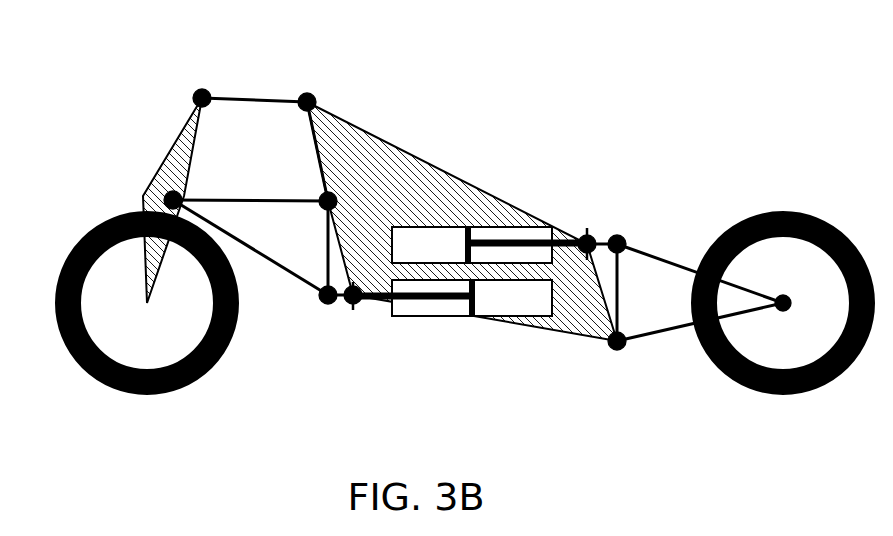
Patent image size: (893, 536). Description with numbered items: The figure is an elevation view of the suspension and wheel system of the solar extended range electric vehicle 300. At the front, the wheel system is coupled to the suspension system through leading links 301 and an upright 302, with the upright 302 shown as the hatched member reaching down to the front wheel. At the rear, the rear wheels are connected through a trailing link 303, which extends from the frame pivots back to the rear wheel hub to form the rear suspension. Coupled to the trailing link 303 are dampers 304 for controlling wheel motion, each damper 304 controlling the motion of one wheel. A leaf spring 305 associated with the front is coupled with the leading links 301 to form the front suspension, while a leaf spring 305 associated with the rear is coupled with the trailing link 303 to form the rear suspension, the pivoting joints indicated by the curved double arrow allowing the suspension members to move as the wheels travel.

The solar extended range electric vehicle 300 is at (90, 82).
The leading links 301 is at (232, 183).
The upright 302 is at (150, 156).
The trailing link 303 is at (663, 246).
The dampers 304 is at (412, 280).
The leaf spring 305 is at (603, 211).